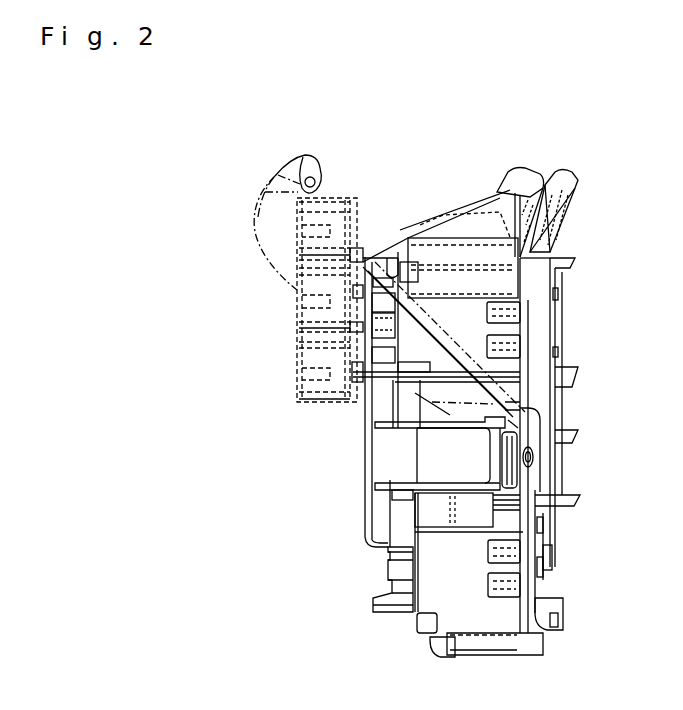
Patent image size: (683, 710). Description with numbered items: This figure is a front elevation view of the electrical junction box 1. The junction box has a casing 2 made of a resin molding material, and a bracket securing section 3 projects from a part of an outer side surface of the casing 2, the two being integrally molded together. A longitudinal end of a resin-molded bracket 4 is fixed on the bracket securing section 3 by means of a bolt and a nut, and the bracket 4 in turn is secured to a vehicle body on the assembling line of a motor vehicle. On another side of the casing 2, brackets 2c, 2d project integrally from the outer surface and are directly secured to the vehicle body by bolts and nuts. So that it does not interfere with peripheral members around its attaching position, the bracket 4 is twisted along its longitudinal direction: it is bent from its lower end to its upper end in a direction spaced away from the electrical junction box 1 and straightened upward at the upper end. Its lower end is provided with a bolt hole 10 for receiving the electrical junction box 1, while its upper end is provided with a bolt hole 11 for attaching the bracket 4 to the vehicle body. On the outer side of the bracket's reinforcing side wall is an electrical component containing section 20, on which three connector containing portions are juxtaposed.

The electrical junction box 1 is at (222, 159).
The casing 2 is at (448, 572).
The bracket 2c is at (514, 167).
The bracket 2d is at (561, 167).
The bracket securing section 3 is at (520, 492).
The bracket 4 is at (360, 408).
The bolt hole 10 is at (527, 447).
The bolt hole 11 is at (320, 185).
The electrical component containing section 20 is at (295, 316).